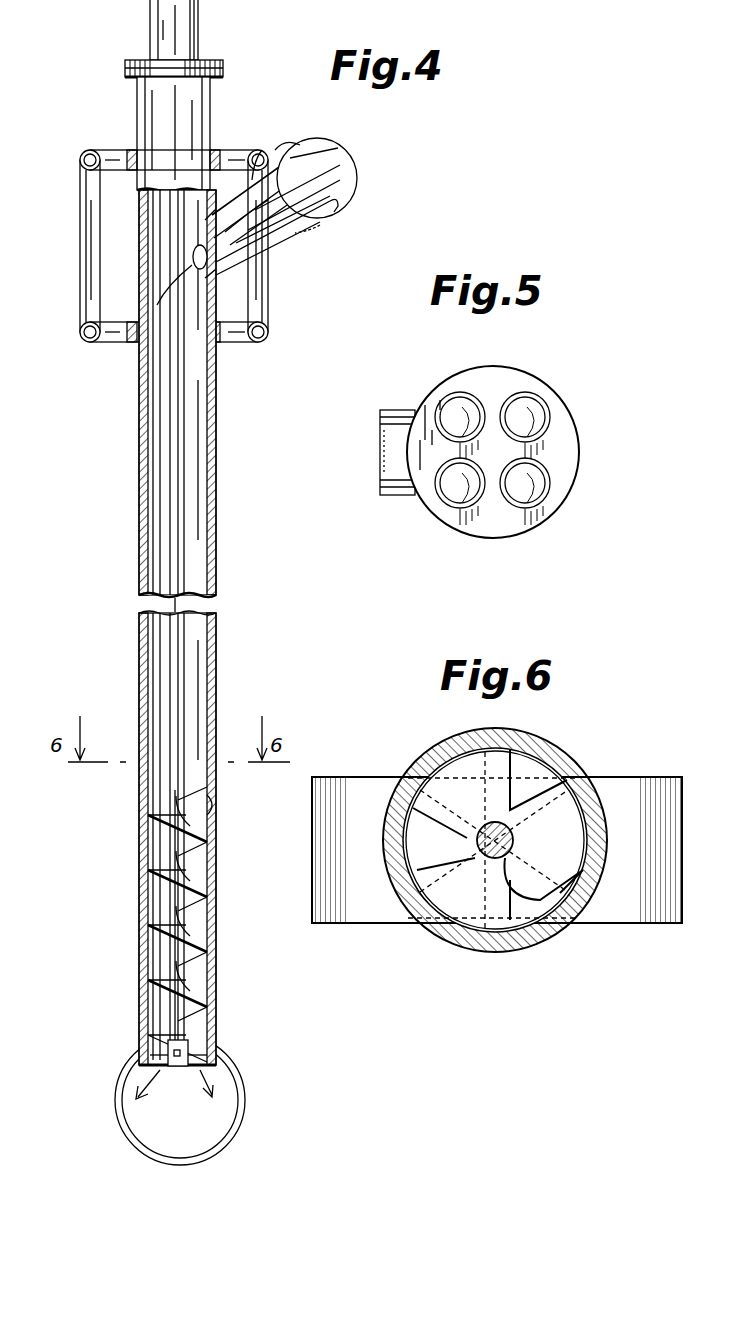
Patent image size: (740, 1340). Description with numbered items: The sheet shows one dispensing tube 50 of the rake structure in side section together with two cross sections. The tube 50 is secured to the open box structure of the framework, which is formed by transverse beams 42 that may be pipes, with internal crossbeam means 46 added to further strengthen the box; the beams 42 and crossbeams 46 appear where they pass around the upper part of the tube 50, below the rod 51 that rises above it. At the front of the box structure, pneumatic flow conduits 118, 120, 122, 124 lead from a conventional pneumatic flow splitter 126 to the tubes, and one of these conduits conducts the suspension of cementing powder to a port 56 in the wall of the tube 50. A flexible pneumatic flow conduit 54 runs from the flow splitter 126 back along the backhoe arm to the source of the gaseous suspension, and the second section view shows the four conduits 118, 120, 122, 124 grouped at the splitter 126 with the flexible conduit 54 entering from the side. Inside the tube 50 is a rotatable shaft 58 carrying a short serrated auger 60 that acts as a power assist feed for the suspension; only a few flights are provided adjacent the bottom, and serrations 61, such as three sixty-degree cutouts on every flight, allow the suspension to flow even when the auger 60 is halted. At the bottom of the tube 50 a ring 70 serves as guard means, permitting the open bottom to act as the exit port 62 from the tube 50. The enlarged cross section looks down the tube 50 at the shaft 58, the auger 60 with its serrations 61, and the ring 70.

In FIG. 4, the transverse beam 42 is at (80, 160).
In FIG. 4, the internal crossbeam means 46 is at (235, 155).
In FIG. 4, the tube 50 is at (140, 478).
In FIG. 6, the tube 50 is at (572, 740).
In FIG. 4, the rod 51 is at (112, 2).
In FIG. 5, the flexible pneumatic flow conduit 54 is at (392, 410).
In FIG. 4, the port 56 is at (207, 292).
In FIG. 4, the rotatable shaft 58 is at (170, 402).
In FIG. 6, the rotatable shaft 58 is at (515, 838).
In FIG. 4, the serrated auger 60 is at (176, 924).
In FIG. 6, the serrated auger 60 is at (588, 760).
In FIG. 4, the serrations 61 is at (150, 908).
In FIG. 6, the serrations 61 is at (450, 735).
In FIG. 4, the exit port 62 is at (168, 1068).
In FIG. 4, the ring 70 is at (228, 1095).
In FIG. 6, the ring 70 is at (362, 782).
In FIG. 4, the pneumatic flow conduit 118 is at (345, 160).
In FIG. 5, the pneumatic flow conduit 118 is at (540, 397).
In FIG. 4, the pneumatic flow conduit 120 is at (338, 117).
In FIG. 5, the pneumatic flow conduit 120 is at (450, 396).
In FIG. 5, the pneumatic flow conduit 122 is at (440, 497).
In FIG. 4, the pneumatic flow conduit 124 is at (352, 206).
In FIG. 5, the pneumatic flow conduit 124 is at (550, 480).
In FIG. 4, the pneumatic flow splitter 126 is at (350, 180).
In FIG. 5, the pneumatic flow splitter 126 is at (545, 520).